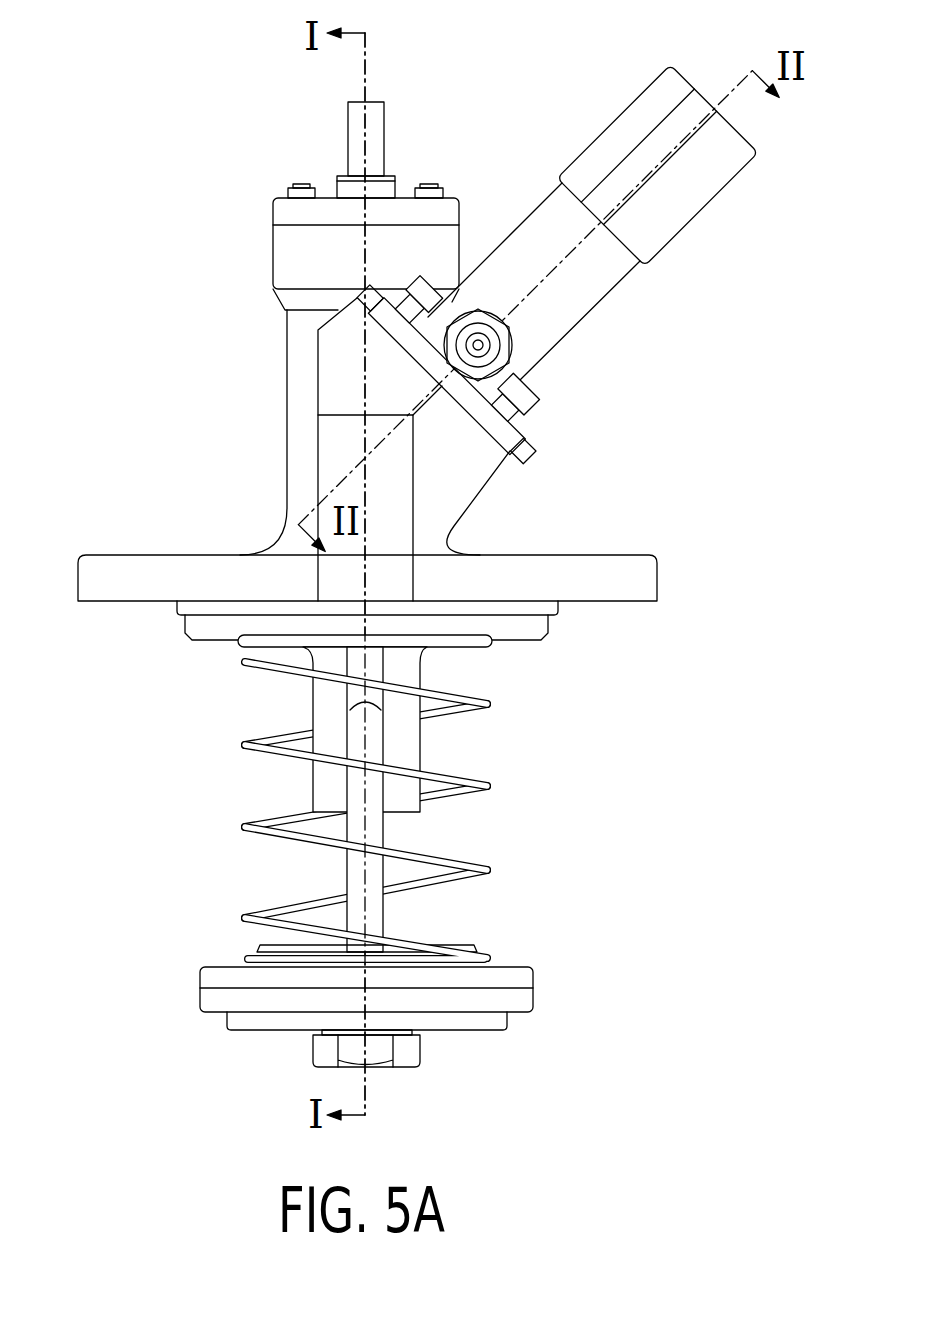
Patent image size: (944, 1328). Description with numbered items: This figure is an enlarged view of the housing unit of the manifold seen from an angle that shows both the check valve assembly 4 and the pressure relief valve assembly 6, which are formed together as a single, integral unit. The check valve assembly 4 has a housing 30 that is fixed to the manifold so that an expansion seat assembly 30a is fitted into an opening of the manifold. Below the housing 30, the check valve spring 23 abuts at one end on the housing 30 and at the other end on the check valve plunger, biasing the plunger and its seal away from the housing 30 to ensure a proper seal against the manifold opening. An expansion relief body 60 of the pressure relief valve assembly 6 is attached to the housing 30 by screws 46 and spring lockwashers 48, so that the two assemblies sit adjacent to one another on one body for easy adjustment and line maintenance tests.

The check valve assembly 4 is at (200, 244).
The pressure relief valve assembly 6 is at (607, 90).
The check valve spring 23 is at (256, 760).
The housing 30 is at (286, 422).
The expansion seat assembly 30a is at (110, 555).
The screws 46 is at (550, 400).
The spring lockwashers 48 is at (533, 423).
The expansion relief body 60 is at (614, 296).